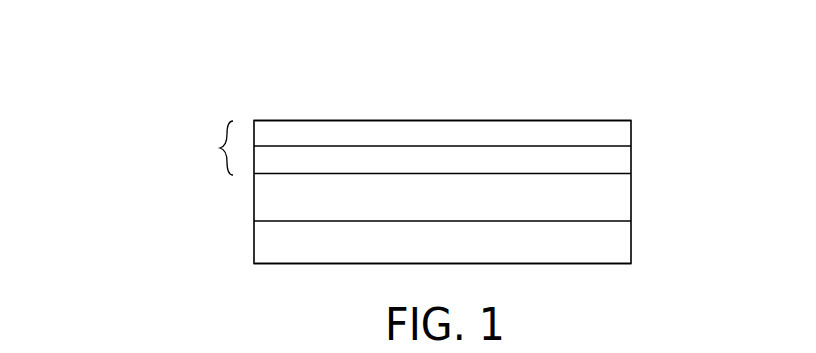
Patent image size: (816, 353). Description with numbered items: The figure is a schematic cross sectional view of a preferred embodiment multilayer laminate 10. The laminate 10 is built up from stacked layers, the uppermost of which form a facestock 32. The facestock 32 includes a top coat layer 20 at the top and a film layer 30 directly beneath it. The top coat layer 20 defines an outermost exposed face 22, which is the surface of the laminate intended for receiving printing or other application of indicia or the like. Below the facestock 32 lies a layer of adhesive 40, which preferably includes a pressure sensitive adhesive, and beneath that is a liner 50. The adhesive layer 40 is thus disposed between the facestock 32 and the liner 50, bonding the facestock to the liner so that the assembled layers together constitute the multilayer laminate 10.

The multilayer laminate 10 is at (148, 56).
The top coat layer 20 is at (615, 131).
The outermost exposed face 22 is at (525, 120).
The film layer 30 is at (615, 162).
The facestock 32 is at (212, 148).
The layer of adhesive 40 is at (615, 201).
The liner 50 is at (615, 243).